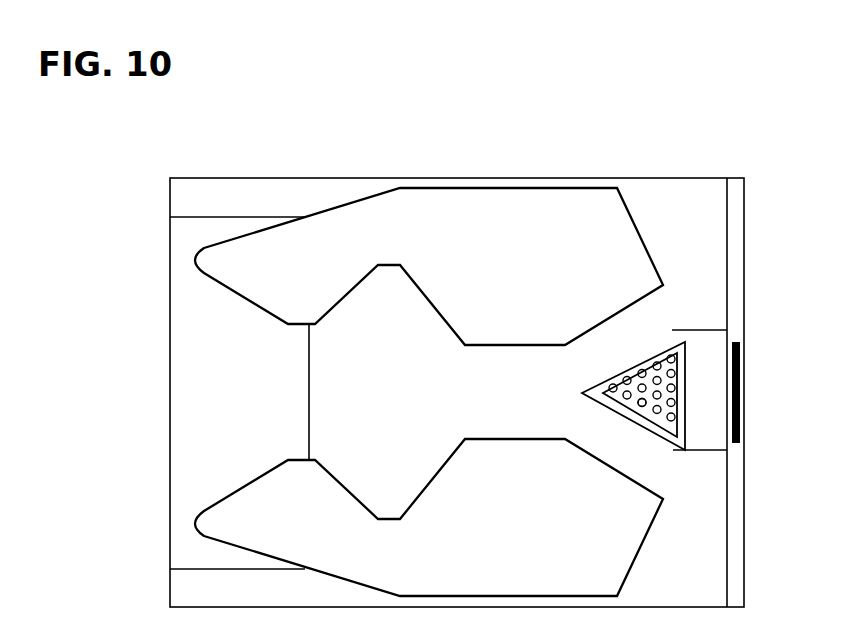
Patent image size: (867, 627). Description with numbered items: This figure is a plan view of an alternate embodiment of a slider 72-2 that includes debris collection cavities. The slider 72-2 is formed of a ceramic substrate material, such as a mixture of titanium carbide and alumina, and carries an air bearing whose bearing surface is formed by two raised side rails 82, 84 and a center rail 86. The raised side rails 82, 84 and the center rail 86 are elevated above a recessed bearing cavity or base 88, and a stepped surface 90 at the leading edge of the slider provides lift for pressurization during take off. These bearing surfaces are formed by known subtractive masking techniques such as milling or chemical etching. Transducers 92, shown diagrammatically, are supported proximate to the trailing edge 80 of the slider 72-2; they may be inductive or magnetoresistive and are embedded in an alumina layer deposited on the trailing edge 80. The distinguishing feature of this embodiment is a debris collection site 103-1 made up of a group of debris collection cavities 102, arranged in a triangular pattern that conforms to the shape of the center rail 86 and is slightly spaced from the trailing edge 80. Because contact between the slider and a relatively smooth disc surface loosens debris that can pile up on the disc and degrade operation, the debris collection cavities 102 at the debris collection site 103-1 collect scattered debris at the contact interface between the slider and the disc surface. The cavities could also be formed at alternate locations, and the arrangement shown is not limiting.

The slider 72-2 is at (697, 148).
The trailing edge 80 is at (745, 557).
The raised side rail 82 is at (532, 292).
The raised side rail 84 is at (527, 568).
The center rail 86 is at (710, 442).
The recessed bearing cavity 88 is at (390, 390).
The stepped surface 90 is at (242, 390).
The transducers 92 is at (741, 393).
The debris collection cavities 102 is at (659, 362).
The debris collection site 103-1 is at (643, 412).